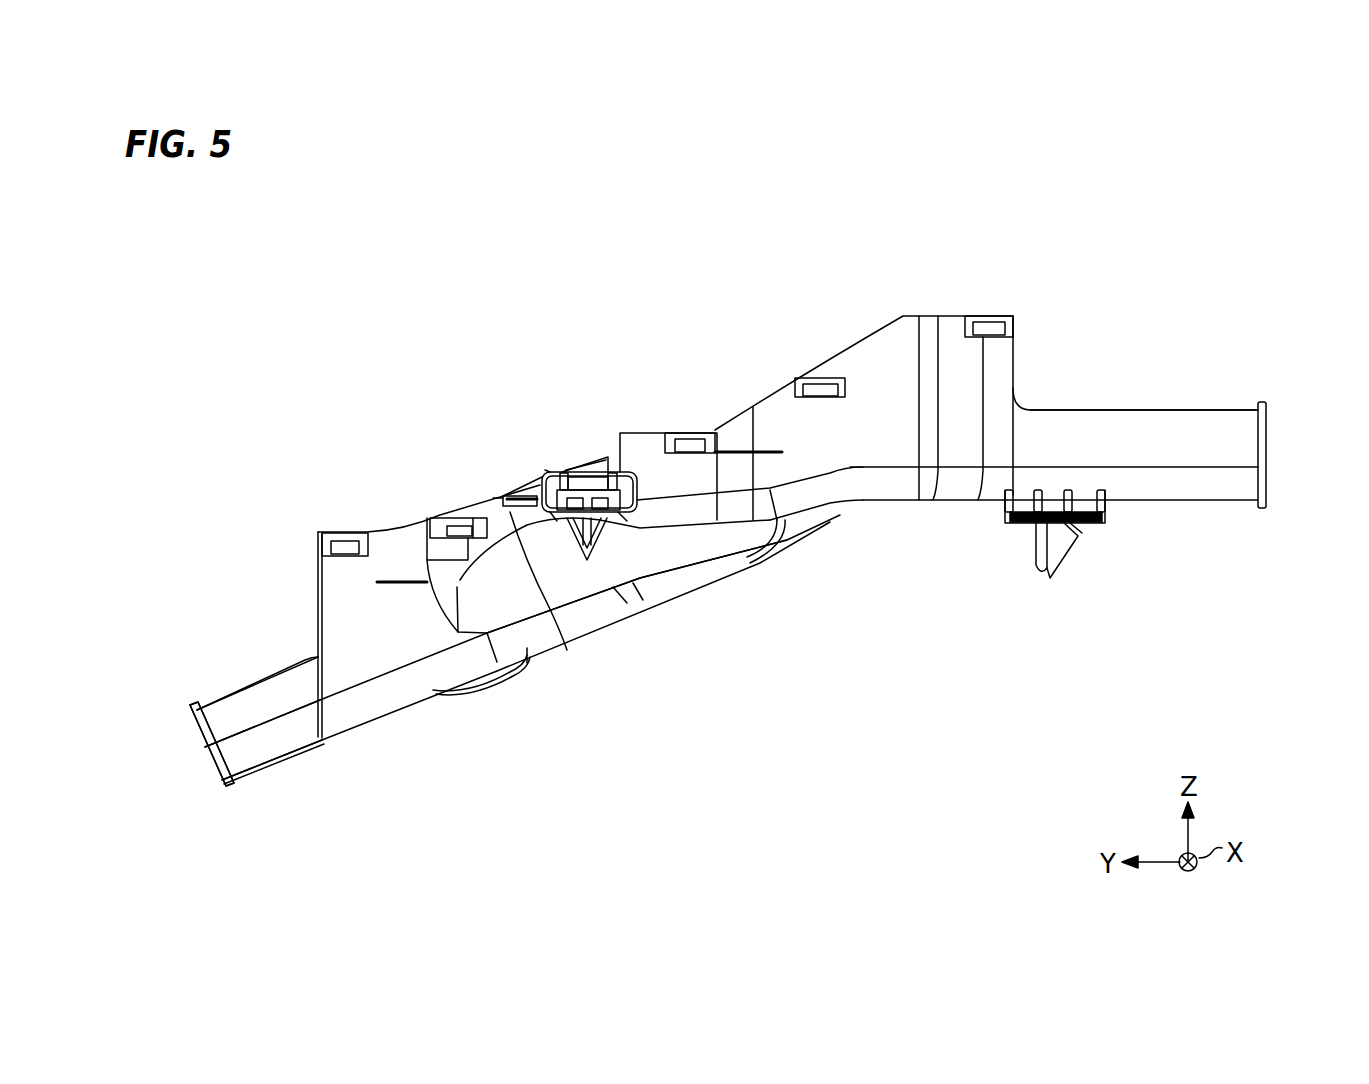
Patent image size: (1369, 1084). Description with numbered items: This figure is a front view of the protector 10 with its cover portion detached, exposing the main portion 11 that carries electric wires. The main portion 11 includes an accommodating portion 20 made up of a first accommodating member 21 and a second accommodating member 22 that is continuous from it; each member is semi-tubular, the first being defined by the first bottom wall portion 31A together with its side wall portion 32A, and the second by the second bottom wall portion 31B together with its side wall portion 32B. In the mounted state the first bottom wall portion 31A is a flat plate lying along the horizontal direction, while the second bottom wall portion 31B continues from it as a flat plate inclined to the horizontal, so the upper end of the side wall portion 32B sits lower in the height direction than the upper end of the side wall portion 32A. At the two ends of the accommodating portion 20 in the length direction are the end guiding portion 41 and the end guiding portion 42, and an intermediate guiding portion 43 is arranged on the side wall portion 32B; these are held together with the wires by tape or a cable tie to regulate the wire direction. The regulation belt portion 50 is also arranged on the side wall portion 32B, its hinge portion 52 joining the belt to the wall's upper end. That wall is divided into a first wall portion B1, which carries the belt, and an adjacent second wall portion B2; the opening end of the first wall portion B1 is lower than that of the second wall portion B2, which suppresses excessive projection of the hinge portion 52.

The protector 10 is at (413, 283).
The main portion 11 is at (920, 490).
The accommodating portion 20 is at (880, 487).
The first accommodating member 21 is at (1003, 377).
The second accommodating member 22 is at (541, 637).
The first bottom wall portion 31A is at (983, 500).
The second bottom wall portion 31B is at (680, 590).
The side wall portion 32A is at (950, 315).
The side wall portion 32B is at (690, 428).
The end guiding portion 41 is at (1212, 500).
The end guiding portion 42 is at (241, 758).
The intermediate guiding portion 43 is at (620, 528).
The regulation belt portion 50 is at (540, 478).
The hinge portion 52 is at (505, 496).
The first wall portion B1 is at (562, 640).
The second wall portion B2 is at (496, 501).